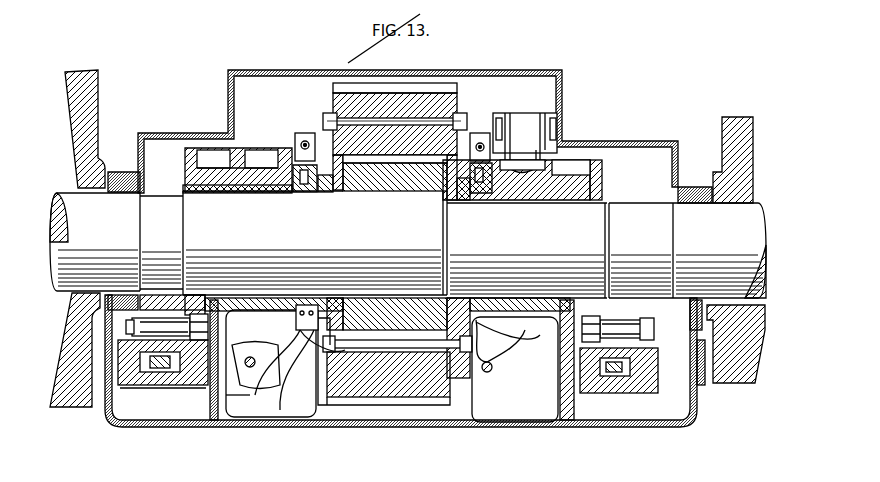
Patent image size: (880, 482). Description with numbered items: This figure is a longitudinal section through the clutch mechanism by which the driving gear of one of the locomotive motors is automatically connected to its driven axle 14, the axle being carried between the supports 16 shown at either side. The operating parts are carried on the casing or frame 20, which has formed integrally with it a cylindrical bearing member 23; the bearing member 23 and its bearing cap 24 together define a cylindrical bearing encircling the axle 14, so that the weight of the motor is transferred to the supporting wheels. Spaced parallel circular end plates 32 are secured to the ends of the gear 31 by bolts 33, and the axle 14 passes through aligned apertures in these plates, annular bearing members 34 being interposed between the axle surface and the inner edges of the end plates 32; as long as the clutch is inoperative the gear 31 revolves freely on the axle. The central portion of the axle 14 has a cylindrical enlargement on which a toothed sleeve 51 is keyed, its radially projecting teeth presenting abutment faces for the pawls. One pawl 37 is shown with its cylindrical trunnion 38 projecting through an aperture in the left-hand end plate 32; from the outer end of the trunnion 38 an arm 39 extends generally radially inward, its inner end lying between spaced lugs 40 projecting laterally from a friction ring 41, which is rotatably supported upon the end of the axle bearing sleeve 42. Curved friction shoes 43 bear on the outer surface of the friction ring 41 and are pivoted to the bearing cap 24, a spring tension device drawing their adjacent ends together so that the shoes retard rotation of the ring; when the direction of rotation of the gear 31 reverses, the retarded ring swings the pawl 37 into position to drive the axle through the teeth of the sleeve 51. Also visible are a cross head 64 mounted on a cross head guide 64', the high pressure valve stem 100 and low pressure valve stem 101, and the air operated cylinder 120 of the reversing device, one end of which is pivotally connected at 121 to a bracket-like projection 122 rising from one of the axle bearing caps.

The axle 14 is at (742, 215).
The support 16 is at (80, 407).
The casing or frame 20 is at (618, 435).
The cylindrical bearing member 23 is at (238, 312).
The bearing cap 24 is at (233, 168).
The gear 31 is at (430, 103).
The end plate 32 is at (332, 140).
The bolt 33 is at (363, 120).
The annular bearing member 34 is at (333, 188).
The pawl 37 is at (390, 354).
The trunnion 38 is at (300, 400).
The arm 39 is at (310, 345).
The lug 40 is at (260, 395).
The friction ring 41 is at (268, 380).
The axle bearing sleeve 42 is at (288, 190).
The friction shoe 43 is at (300, 132).
The sleeve 51 is at (397, 188).
The cross head 64 is at (400, 391).
The cross head guide 64' is at (385, 404).
The high pressure valve stem 100 is at (250, 354).
The low pressure valve stem 101 is at (487, 372).
The cylinder 120 is at (535, 158).
The pivotal connection 121 is at (493, 125).
The bracket-like projection 122 is at (560, 132).